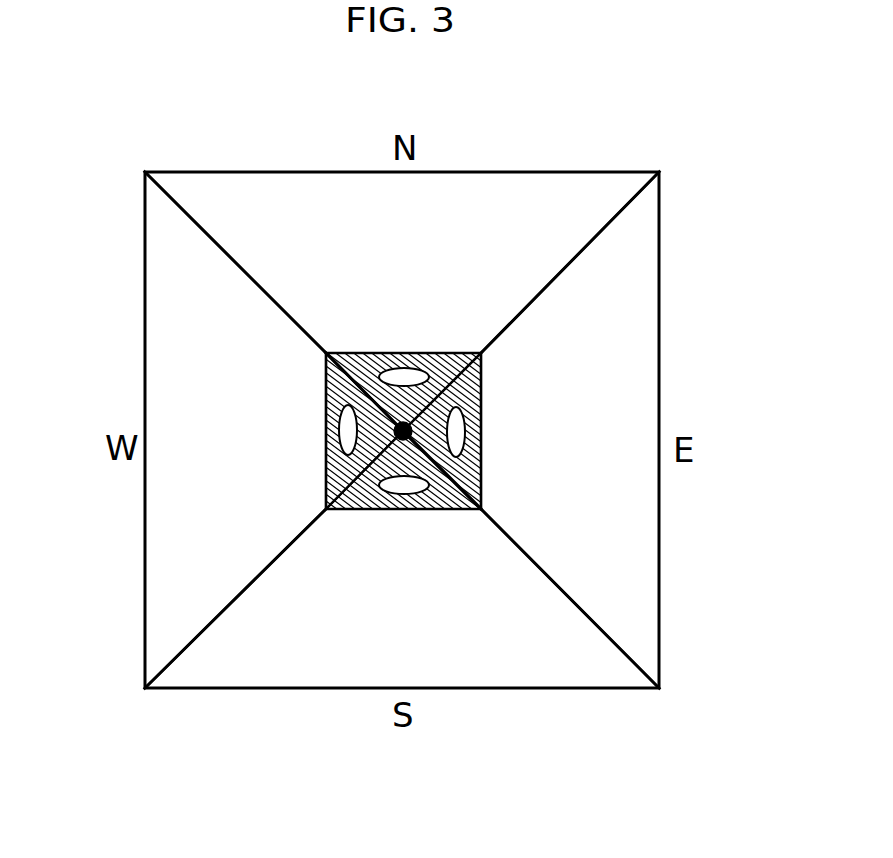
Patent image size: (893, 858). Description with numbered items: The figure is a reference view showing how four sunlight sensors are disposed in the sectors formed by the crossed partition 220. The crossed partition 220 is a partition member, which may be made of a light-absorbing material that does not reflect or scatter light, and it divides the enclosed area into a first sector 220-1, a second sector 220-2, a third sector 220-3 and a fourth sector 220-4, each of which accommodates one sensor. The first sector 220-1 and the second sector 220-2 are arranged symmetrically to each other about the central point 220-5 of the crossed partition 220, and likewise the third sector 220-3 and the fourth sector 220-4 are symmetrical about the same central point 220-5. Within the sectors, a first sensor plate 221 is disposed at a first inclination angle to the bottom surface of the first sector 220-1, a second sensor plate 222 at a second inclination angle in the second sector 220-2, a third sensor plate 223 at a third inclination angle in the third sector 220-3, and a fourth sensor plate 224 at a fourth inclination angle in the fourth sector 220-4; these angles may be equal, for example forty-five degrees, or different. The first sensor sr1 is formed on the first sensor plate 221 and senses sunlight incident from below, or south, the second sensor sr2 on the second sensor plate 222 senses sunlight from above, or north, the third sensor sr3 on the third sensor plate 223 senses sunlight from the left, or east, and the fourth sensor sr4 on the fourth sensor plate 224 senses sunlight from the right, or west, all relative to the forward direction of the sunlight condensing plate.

The crossed partition 220 is at (585, 250).
The first sector 220-1 is at (547, 677).
The second sector 220-2 is at (345, 193).
The third sector 220-3 is at (165, 293).
The fourth sector 220-4 is at (637, 480).
The central point 220-5 is at (480, 467).
The first sensor plate 221 is at (350, 503).
The second sensor plate 222 is at (357, 367).
The third sensor plate 223 is at (323, 471).
The fourth sensor plate 224 is at (480, 395).
The first sensor sr1 is at (415, 500).
The second sensor sr2 is at (427, 370).
The third sensor sr3 is at (323, 422).
The fourth sensor sr4 is at (480, 433).